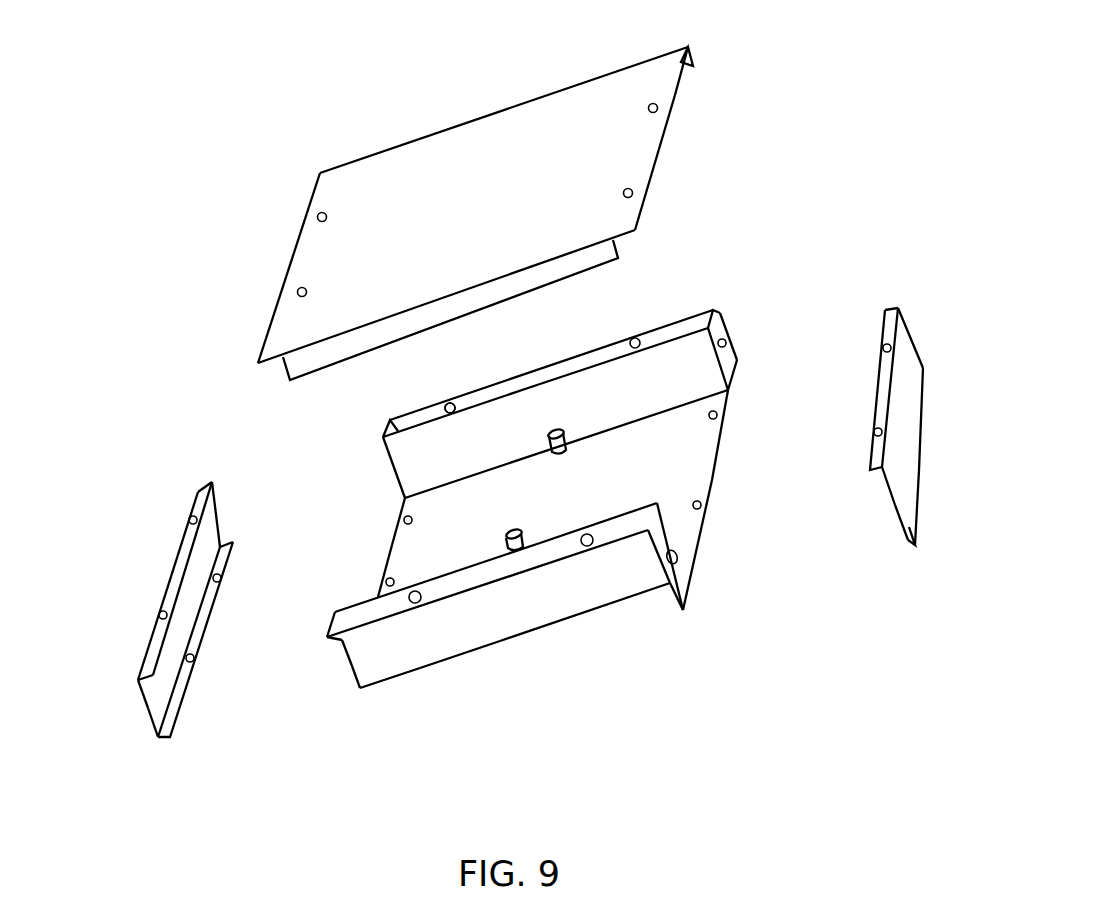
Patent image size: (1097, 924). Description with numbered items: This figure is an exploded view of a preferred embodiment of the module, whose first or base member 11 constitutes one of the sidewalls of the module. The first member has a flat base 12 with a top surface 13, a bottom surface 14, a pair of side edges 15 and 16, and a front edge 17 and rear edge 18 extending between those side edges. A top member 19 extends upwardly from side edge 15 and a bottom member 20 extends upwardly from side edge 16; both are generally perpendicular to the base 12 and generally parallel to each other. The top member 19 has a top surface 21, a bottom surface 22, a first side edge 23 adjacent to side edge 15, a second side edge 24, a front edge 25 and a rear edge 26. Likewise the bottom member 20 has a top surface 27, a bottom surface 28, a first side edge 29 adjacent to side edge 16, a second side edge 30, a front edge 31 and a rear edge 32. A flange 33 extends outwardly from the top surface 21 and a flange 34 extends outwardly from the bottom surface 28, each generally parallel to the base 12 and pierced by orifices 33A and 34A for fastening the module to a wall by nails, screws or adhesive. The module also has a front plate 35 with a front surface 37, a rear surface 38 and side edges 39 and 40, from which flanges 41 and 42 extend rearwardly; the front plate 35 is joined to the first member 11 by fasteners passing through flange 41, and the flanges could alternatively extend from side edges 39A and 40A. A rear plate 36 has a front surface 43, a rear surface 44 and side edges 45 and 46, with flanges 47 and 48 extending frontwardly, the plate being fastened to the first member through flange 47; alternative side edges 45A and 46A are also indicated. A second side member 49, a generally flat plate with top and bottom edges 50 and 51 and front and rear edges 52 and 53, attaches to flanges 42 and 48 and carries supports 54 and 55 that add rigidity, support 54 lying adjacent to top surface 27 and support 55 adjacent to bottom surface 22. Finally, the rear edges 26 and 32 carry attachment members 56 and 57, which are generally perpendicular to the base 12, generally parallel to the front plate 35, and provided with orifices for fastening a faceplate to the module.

The first or base member 11 is at (568, 622).
The base 12 is at (397, 547).
The top surface 13 is at (708, 470).
The bottom surface 14 is at (700, 555).
The side edge 15 is at (716, 394).
The side edge 16 is at (457, 659).
The front edge 17 is at (383, 560).
The rear edge 18 is at (722, 442).
The top member 19 is at (397, 457).
The bottom member 20 is at (348, 670).
The top surface 21 is at (382, 437).
The bottom surface 22 is at (716, 345).
The first side edge 23 is at (648, 416).
The second side edge 24 is at (665, 342).
The front edge 25 is at (400, 430).
The rear edge 26 is at (733, 368).
The top surface 27 is at (621, 513).
The bottom surface 28 is at (373, 678).
The first side edge 29 is at (408, 673).
The second side edge 30 is at (455, 571).
The front edge 31 is at (338, 642).
The rear edge 32 is at (680, 542).
The flange 33 is at (504, 387).
The orifice 33A is at (450, 403).
The flange 34 is at (334, 623).
The orifice 34A is at (416, 604).
The front plate 35 is at (910, 370).
The rear plate 36 is at (178, 558).
The front surface 37 is at (918, 395).
The rear surface 38 is at (895, 506).
The side edge 39 is at (918, 508).
The side edge 39A is at (888, 488).
The side edge 40 is at (880, 412).
The side edge 40A is at (898, 306).
The flange 41 is at (904, 536).
The flange 42 is at (912, 336).
The front surface 43 is at (140, 681).
The rear surface 44 is at (166, 680).
The side edge 45 is at (150, 724).
The side edge 45A is at (150, 710).
The side edge 46 is at (220, 536).
The side edge 46A is at (234, 543).
The flange 47 is at (170, 740).
The flange 48 is at (214, 484).
The second side member 49 is at (676, 54).
The top edge 50 is at (562, 90).
The bottom edge 51 is at (272, 367).
The front edge 52 is at (658, 170).
The rear edge 53 is at (276, 304).
The support 54 is at (622, 256).
The support 55 is at (694, 62).
The attachment member 56 is at (721, 312).
The attachment member 57 is at (690, 592).